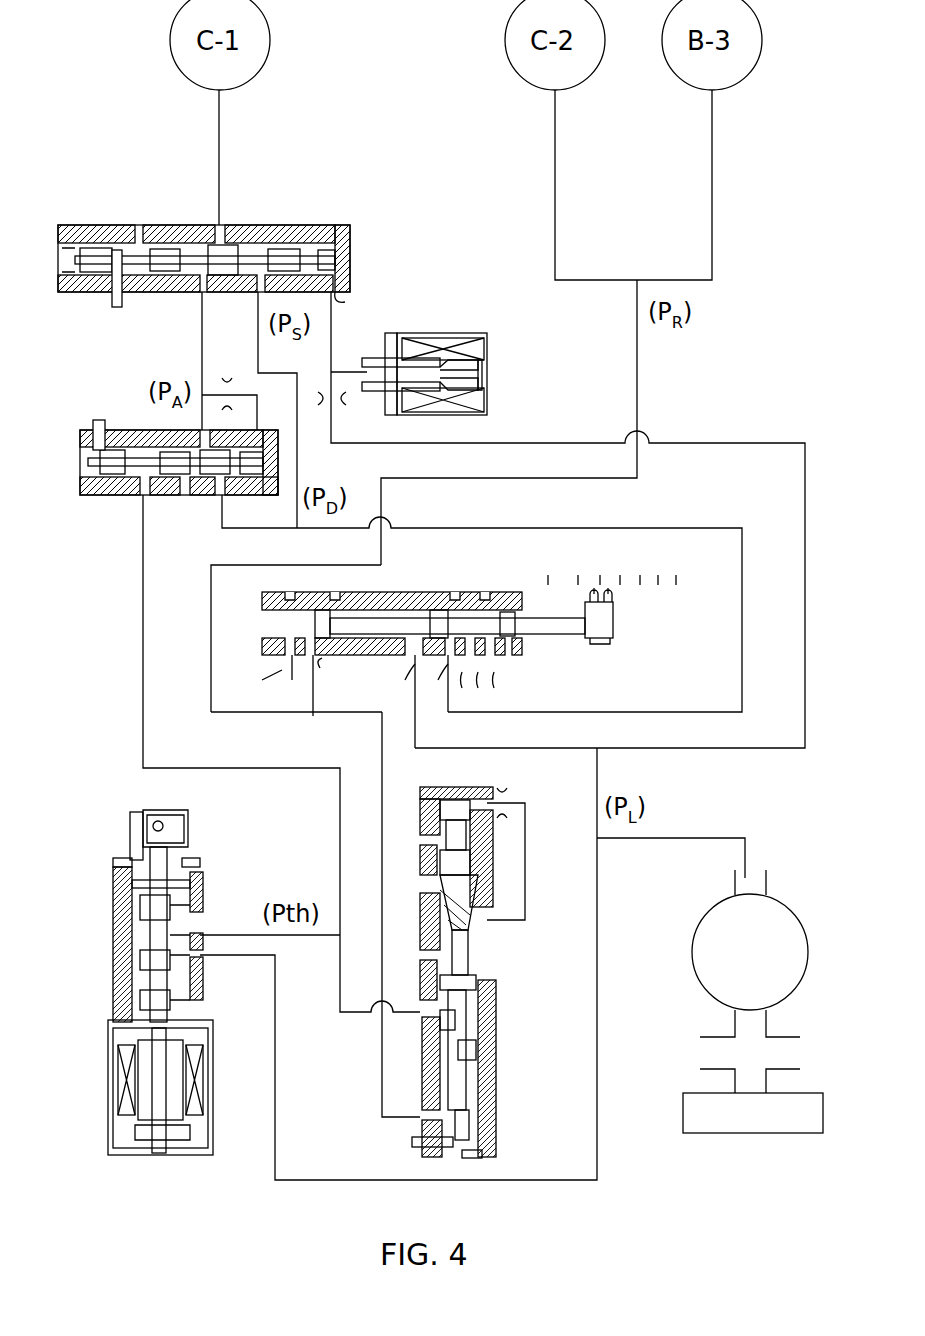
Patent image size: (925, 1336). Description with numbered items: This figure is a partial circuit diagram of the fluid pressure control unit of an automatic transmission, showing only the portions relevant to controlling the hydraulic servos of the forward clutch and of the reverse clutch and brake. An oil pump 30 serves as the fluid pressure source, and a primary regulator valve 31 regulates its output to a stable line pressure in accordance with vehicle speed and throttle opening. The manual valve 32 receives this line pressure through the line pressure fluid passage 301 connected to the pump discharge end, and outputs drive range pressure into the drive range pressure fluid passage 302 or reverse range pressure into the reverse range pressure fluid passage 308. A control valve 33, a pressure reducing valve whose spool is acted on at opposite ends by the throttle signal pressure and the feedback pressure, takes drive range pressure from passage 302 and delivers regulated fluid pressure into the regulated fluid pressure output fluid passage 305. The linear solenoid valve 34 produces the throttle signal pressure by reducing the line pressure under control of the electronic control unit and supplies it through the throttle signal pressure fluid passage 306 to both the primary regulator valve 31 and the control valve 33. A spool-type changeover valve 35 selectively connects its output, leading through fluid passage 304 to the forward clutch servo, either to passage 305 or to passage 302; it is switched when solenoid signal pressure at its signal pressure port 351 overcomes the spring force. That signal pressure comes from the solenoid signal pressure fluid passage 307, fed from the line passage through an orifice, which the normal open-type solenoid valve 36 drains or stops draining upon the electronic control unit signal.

The oil pump 30 is at (699, 955).
The primary regulator valve 31 is at (500, 1115).
The manual valve 32 is at (636, 627).
The C-1 control valve 33 is at (95, 505).
The linear solenoid valve 34 is at (185, 1173).
The C-1 changeover valve 35 is at (67, 310).
The solenoid valve 36 is at (497, 370).
The line pressure fluid passage 301 is at (573, 750).
The D range pressure fluid passage 302 is at (633, 684).
The fluid passage 304 is at (219, 150).
The regulated fluid pressure output fluid passage 305 is at (200, 332).
The throttle signal pressure fluid passage 306 is at (143, 660).
The solenoid signal pressure fluid passage 307 is at (332, 322).
The R range pressure fluid passage 308 is at (313, 712).
The signal pressure port 351 is at (345, 300).